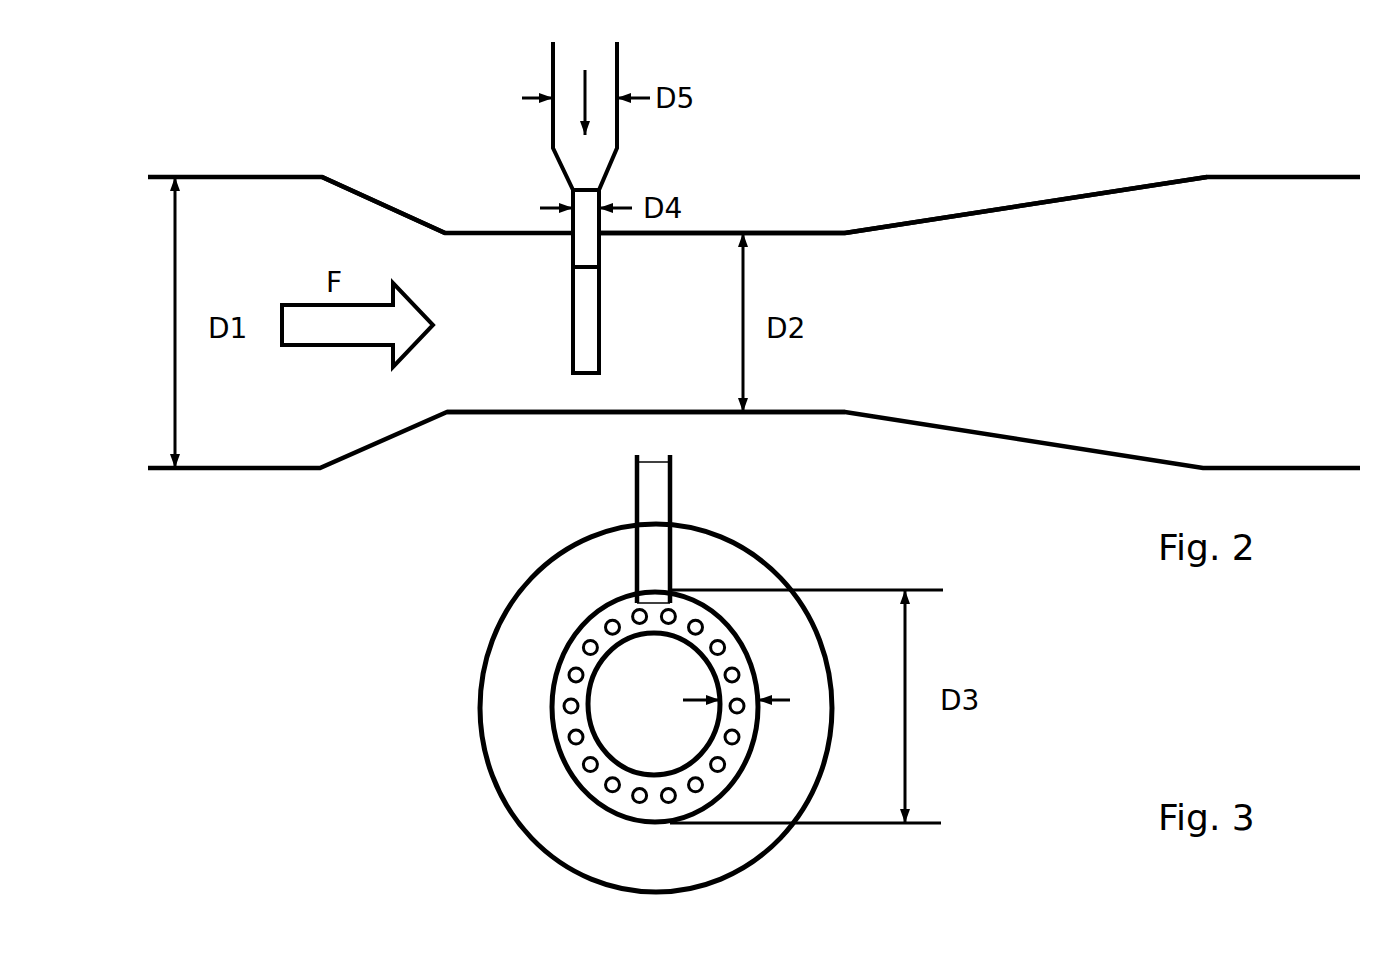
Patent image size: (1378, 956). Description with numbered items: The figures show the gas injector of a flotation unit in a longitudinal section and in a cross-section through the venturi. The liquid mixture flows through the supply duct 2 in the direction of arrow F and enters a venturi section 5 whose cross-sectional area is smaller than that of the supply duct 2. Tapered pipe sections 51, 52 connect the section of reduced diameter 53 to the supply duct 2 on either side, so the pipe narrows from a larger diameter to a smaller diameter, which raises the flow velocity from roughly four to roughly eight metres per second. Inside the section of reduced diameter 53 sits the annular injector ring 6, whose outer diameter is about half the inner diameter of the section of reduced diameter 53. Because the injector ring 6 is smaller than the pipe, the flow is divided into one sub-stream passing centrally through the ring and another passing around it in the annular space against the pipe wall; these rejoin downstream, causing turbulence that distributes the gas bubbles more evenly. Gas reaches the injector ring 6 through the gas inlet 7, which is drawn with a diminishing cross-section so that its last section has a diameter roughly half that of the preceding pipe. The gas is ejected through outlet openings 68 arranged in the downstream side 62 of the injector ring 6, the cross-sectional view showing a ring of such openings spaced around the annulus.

In FIG. 2, the supply duct 2 is at (260, 473).
In FIG. 2, the venturi section 5 is at (455, 420).
In FIG. 2, the tapered pipe section 51 is at (423, 217).
In FIG. 2, the tapered pipe section 52 is at (1045, 193).
In FIG. 2, the section of reduced diameter 53 is at (762, 230).
In FIG. 3, the section of reduced diameter 53 is at (585, 708).
In FIG. 2, the injector ring 6 is at (577, 353).
In FIG. 3, the injector ring 6 is at (565, 760).
In FIG. 2, the gas inlet 7 is at (634, 240).
In FIG. 3, the gas inlet 7 is at (699, 529).
In FIG. 3, the downstream side 62 is at (529, 704).
In FIG. 3, the outlet openings 68 is at (579, 705).